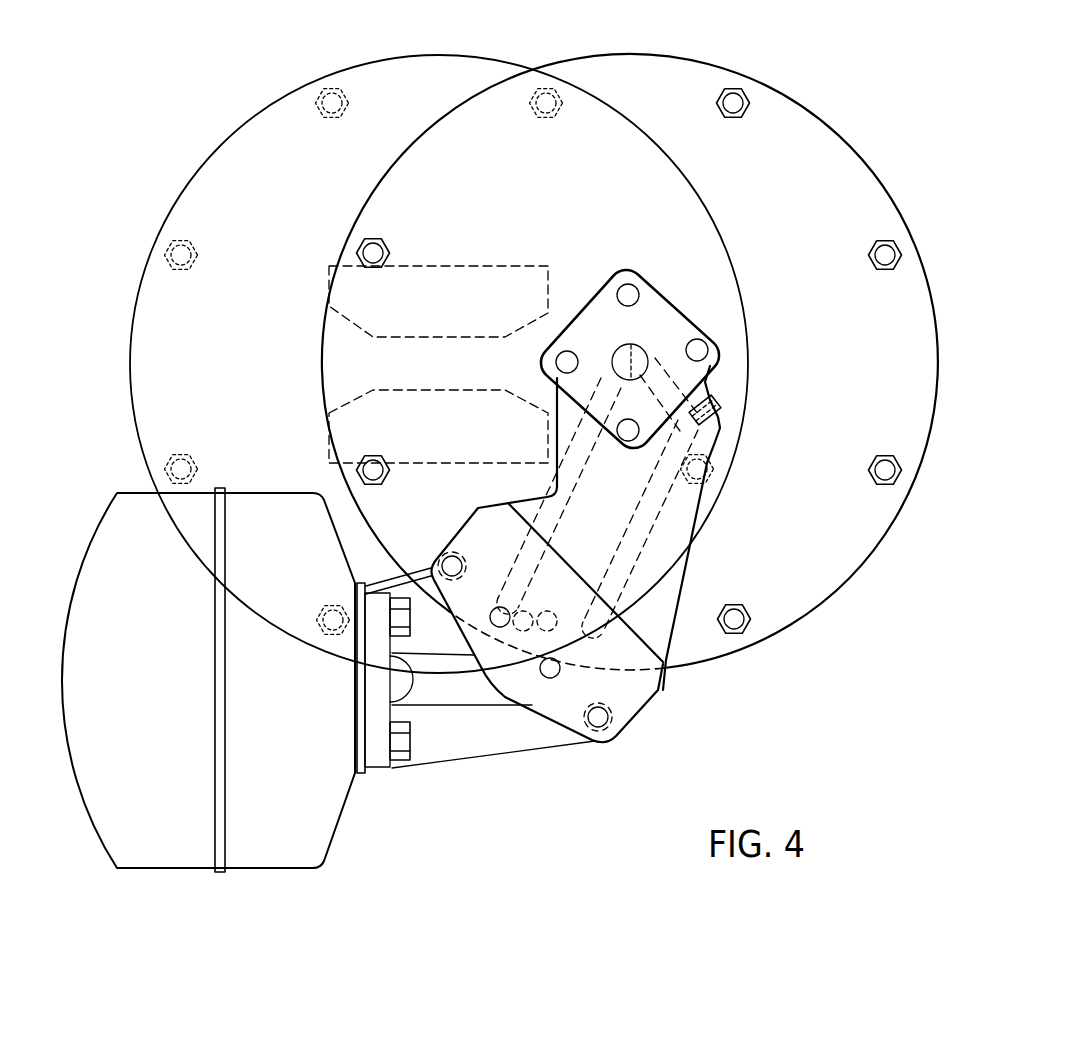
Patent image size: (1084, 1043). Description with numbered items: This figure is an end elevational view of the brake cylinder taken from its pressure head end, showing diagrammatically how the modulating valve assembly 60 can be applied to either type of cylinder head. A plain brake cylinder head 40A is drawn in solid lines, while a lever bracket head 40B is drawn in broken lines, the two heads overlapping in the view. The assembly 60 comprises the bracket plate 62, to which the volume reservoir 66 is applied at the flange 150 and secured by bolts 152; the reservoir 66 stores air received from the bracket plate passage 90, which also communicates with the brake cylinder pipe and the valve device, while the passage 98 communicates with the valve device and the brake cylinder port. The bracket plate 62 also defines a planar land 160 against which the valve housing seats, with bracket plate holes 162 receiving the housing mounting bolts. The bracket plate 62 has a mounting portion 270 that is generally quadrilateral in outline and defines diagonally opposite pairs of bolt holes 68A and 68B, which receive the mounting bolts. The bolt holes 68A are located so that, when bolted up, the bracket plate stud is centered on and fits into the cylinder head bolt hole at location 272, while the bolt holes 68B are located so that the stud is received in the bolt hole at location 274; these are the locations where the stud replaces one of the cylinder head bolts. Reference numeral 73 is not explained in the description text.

The plain brake cylinder head 40A is at (670, 67).
The lever bracket head 40B is at (402, 99).
The assembly 60 is at (774, 414).
The bracket plate 62 is at (700, 553).
The volume reservoir 66 is at (189, 866).
The bolt holes 68A is at (560, 355).
The bolt holes 68B is at (630, 290).
The bracket edge 73 is at (597, 312).
The passage 90 is at (633, 592).
The passage 98 is at (559, 496).
The flange 150 is at (378, 750).
The bolts 152 is at (411, 743).
The planar land 160 is at (640, 690).
The bracket plate holes 162 is at (450, 557).
The mounting portion 270 is at (679, 300).
The bolt hole location 272 is at (488, 670).
The bolt hole location 274 is at (554, 629).